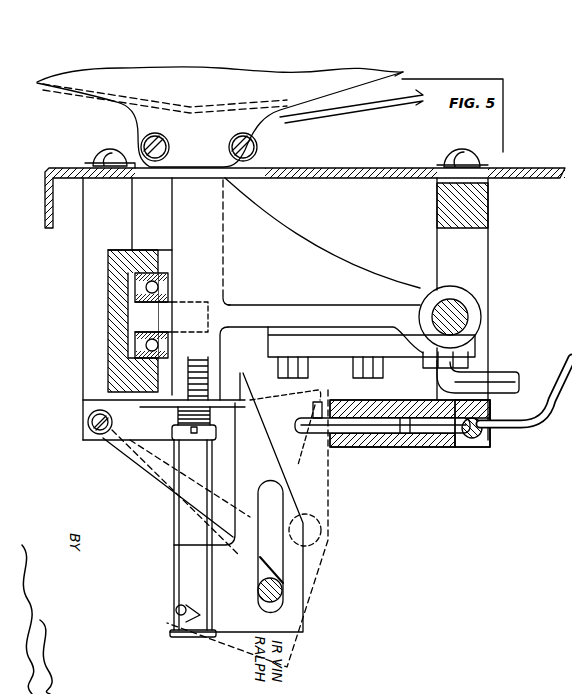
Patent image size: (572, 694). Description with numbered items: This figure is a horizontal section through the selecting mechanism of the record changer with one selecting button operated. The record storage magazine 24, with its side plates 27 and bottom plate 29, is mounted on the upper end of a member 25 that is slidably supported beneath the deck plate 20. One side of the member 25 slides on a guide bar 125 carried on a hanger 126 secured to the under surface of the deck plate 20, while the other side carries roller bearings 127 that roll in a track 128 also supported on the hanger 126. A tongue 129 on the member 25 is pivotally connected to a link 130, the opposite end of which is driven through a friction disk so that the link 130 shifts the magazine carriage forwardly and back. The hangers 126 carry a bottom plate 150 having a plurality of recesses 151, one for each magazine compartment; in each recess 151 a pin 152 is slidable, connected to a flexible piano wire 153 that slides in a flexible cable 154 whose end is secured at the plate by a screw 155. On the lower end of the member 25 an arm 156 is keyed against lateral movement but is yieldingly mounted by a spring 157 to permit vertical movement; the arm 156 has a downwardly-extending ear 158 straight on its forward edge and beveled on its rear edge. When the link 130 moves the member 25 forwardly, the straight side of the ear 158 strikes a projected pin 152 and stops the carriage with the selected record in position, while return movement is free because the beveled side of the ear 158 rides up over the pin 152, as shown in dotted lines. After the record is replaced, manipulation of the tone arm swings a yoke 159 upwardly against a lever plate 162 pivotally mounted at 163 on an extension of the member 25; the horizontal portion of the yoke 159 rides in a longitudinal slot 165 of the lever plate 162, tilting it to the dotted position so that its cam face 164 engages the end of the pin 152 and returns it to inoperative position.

The deck plate 20 is at (362, 167).
The record storage magazine 24 is at (300, 100).
The member 25 is at (188, 200).
The side plates 27 is at (140, 83).
The bottom plate 29 is at (167, 112).
The guide bar 125 is at (456, 316).
The hanger 126 is at (93, 272).
The roller bearings 127 is at (137, 347).
The track 128 is at (110, 318).
The tongue 129 is at (411, 362).
The link 130 is at (502, 378).
The bottom plate 150 is at (415, 432).
The recesses 151 is at (413, 420).
The pin 152 is at (363, 430).
The flexible piano wire 153 is at (440, 425).
The flexible cable 154 is at (522, 430).
The screw 155 is at (478, 448).
The arm 156 is at (283, 401).
The spring 157 is at (173, 412).
The ear 158 is at (330, 400).
The swinging yoke 159 is at (167, 500).
The lever plate 162 is at (248, 623).
The pivot 163 is at (187, 632).
The cam face 164 is at (275, 443).
The longitudinal slot 165 is at (265, 523).